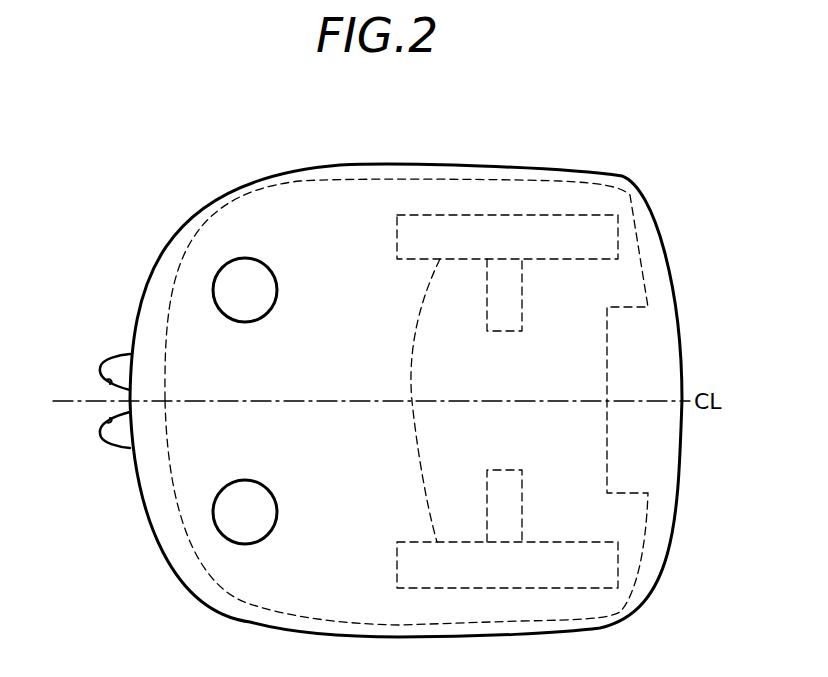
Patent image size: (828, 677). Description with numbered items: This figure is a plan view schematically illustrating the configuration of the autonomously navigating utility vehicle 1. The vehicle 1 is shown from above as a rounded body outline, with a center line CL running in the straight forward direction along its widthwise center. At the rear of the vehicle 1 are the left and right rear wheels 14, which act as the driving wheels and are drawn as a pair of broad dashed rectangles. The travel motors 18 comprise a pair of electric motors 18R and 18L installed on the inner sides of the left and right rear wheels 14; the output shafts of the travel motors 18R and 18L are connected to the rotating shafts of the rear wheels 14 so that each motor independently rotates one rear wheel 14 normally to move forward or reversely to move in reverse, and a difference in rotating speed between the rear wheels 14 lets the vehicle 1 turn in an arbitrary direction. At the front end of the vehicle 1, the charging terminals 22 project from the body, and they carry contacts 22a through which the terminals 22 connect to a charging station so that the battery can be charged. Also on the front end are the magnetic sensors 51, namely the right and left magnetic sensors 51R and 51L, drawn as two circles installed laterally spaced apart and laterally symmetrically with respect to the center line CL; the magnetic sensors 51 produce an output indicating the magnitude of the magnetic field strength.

The autonomously navigating utility vehicle 1 is at (622, 151).
The rear wheels 14 is at (419, 400).
The travel motors 18 is at (507, 401).
The right travel motor 18R is at (503, 331).
The left travel motor 18L is at (507, 470).
The charging terminals 22 is at (107, 381).
The contacts 22a is at (109, 419).
The magnetic sensors 51 is at (231, 401).
The right magnetic sensor 51R is at (245, 322).
The left magnetic sensor 51L is at (246, 480).